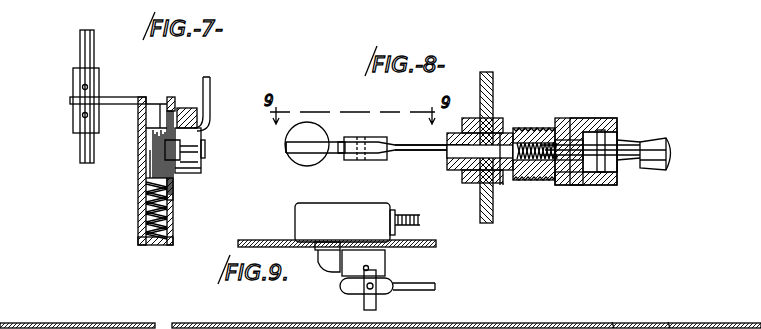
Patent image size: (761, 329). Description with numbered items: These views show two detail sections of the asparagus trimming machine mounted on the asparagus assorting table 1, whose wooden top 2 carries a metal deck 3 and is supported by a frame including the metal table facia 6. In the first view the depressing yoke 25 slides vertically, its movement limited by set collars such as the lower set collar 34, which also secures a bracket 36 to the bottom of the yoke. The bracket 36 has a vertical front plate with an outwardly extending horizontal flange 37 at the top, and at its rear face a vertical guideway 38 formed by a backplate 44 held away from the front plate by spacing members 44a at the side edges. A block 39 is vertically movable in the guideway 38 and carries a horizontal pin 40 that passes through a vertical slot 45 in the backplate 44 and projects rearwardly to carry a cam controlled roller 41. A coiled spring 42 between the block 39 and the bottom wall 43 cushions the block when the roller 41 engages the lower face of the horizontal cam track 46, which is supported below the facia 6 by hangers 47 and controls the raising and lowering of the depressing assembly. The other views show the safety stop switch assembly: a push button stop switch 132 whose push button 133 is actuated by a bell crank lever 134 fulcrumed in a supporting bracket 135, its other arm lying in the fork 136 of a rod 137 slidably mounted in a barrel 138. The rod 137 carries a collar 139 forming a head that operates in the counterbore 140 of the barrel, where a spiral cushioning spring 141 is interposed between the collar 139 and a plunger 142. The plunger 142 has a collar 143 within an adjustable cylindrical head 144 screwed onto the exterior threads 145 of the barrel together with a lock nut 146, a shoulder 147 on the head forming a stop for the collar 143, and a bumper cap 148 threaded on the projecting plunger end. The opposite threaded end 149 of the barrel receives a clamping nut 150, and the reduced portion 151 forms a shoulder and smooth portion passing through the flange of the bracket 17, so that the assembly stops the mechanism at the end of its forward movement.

In FIG. 7, the asparagus assorting table 1 is at (133, 313).
In FIG. 9, the wooden top 2 is at (668, 322).
In FIG. 9, the metal deck 3 is at (610, 322).
In FIG. 9, the metal table facia 6 is at (432, 243).
In FIG. 8, the bracket 17 is at (493, 85).
In FIG. 7, the depressing yoke 25 is at (80, 46).
In FIG. 7, the lower set collar 34 is at (73, 82).
In FIG. 7, the bracket 36 is at (138, 159).
In FIG. 7, the horizontal flange 37 is at (70, 100).
In FIG. 7, the vertical guideway 38 is at (157, 95).
In FIG. 7, the block 39 is at (140, 128).
In FIG. 7, the horizontal pin 40 is at (205, 149).
In FIG. 7, the cam controlled roller 41 is at (198, 172).
In FIG. 7, the coiled spring 42 is at (150, 202).
In FIG. 7, the bottom wall 43 is at (155, 244).
In FIG. 7, the backplate 44 is at (175, 199).
In FIG. 7, the spacing members 44a is at (155, 112).
In FIG. 7, the vertical slot 45 is at (172, 186).
In FIG. 7, the horizontal cam track 46 is at (197, 118).
In FIG. 7, the hangers 47 is at (210, 80).
In FIG. 8, the push button stop switch 132 is at (445, 160).
In FIG. 9, the push button stop switch 132 is at (376, 210).
In FIG. 8, the push button 133 is at (304, 130).
In FIG. 9, the push button 133 is at (325, 242).
In FIG. 8, the bell crank lever 134 is at (336, 152).
In FIG. 9, the bell crank lever 134 is at (334, 268).
In FIG. 9, the supporting bracket 135 is at (386, 258).
In FIG. 8, the fork 136 is at (386, 139).
In FIG. 9, the fork 136 is at (380, 292).
In FIG. 8, the rod 137 is at (413, 148).
In FIG. 9, the rod 137 is at (436, 295).
In FIG. 8, the barrel 138 is at (505, 136).
In FIG. 8, the collar 139 is at (530, 165).
In FIG. 8, the counterbore 140 is at (532, 125).
In FIG. 8, the spiral cushioning spring 141 is at (545, 165).
In FIG. 8, the plunger 142 is at (592, 119).
In FIG. 8, the collar 143 is at (618, 131).
In FIG. 8, the adjustable cylindrical head 144 is at (601, 186).
In FIG. 8, the exterior threads 145 is at (550, 146).
In FIG. 8, the lock nut 146 is at (566, 188).
In FIG. 8, the shoulder 147 is at (615, 172).
In FIG. 8, the bumper cap 148 is at (662, 147).
In FIG. 8, the threaded end 149 is at (470, 170).
In FIG. 8, the clamping nut 150 is at (474, 116).
In FIG. 8, the reduced portion 151 is at (503, 185).